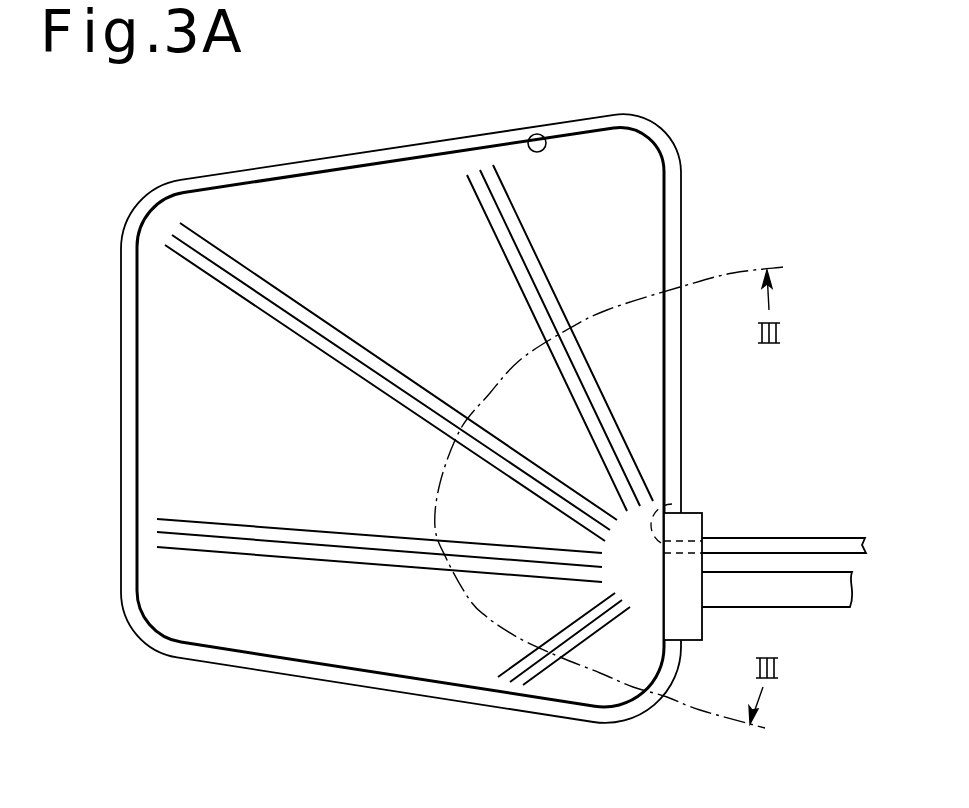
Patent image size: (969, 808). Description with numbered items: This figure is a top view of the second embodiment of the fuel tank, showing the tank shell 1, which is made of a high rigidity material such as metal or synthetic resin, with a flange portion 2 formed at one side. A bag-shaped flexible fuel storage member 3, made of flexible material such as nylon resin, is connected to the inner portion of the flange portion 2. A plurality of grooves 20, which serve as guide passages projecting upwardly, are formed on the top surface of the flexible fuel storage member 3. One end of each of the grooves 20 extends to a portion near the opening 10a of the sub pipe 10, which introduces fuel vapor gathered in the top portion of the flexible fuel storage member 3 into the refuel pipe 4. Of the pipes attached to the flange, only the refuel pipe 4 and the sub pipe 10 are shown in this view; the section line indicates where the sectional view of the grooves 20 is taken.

The tank shell 1 is at (290, 167).
The flange portion 2 is at (690, 522).
The flexible fuel storage member 3 is at (537, 134).
The refuel pipe 4 is at (818, 597).
The sub pipe 10 is at (797, 540).
The opening of the sub pipe 10a is at (668, 492).
The grooves 20 is at (537, 247).